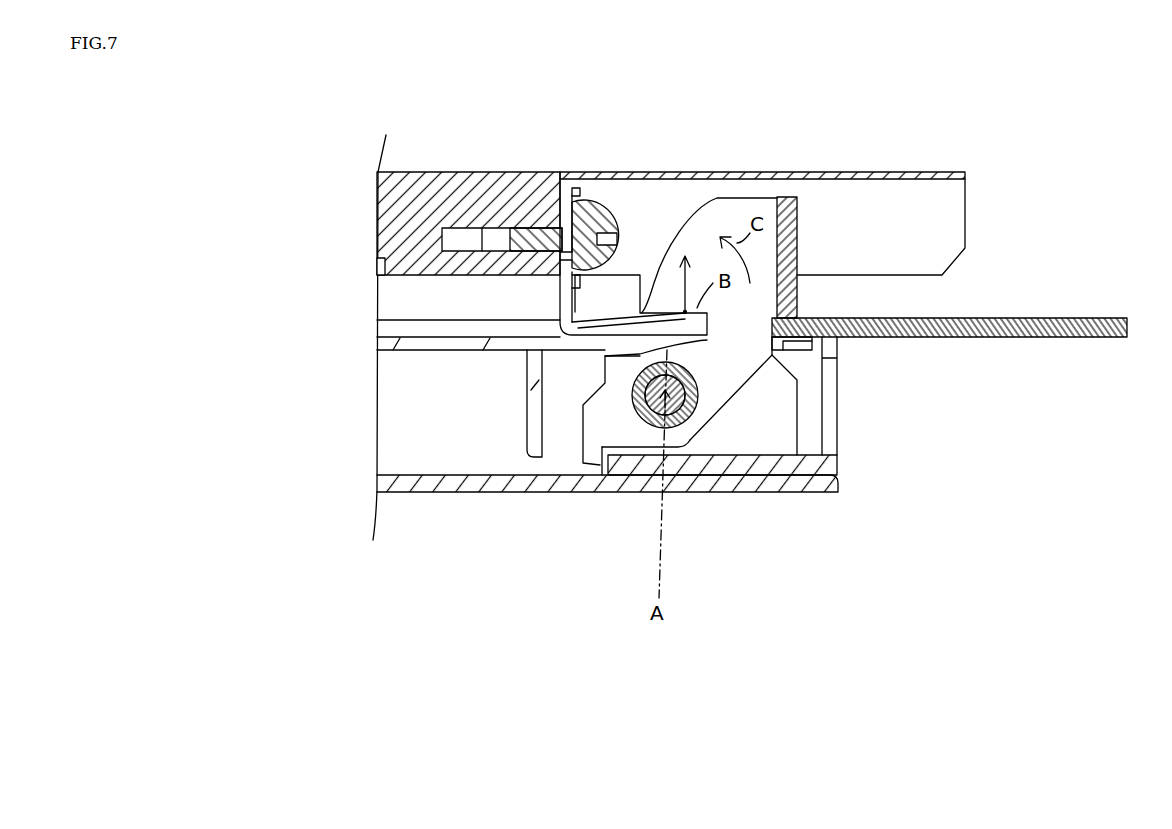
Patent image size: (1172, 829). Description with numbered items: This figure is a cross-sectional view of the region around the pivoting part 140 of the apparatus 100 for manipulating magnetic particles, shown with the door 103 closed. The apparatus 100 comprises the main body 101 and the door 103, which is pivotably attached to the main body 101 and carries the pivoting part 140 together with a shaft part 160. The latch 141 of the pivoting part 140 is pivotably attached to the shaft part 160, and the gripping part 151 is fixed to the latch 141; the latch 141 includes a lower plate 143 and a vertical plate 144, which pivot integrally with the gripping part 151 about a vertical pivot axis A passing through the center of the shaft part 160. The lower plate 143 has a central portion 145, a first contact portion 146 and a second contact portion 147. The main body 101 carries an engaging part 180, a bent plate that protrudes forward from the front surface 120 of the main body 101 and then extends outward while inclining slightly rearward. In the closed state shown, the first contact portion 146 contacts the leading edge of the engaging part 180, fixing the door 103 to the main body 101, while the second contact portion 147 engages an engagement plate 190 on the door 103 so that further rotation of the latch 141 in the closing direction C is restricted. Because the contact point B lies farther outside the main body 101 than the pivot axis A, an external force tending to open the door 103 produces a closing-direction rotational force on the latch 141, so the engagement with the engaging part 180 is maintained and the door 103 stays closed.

The apparatus 100 is at (848, 113).
The main body 101 is at (467, 172).
The door 103 is at (437, 495).
The front surface 120 is at (450, 276).
The pivoting part 140 is at (988, 282).
The latch 141 is at (743, 398).
The lower plate 143 is at (757, 389).
The vertical plate 144 is at (798, 233).
The central portion 145 is at (741, 399).
The first contact portion 146 is at (722, 210).
The second contact portion 147 is at (592, 454).
The gripping part 151 is at (1053, 318).
The shaft part 160 is at (664, 406).
The engaging part 180 is at (572, 303).
The engagement plate 190 is at (818, 460).